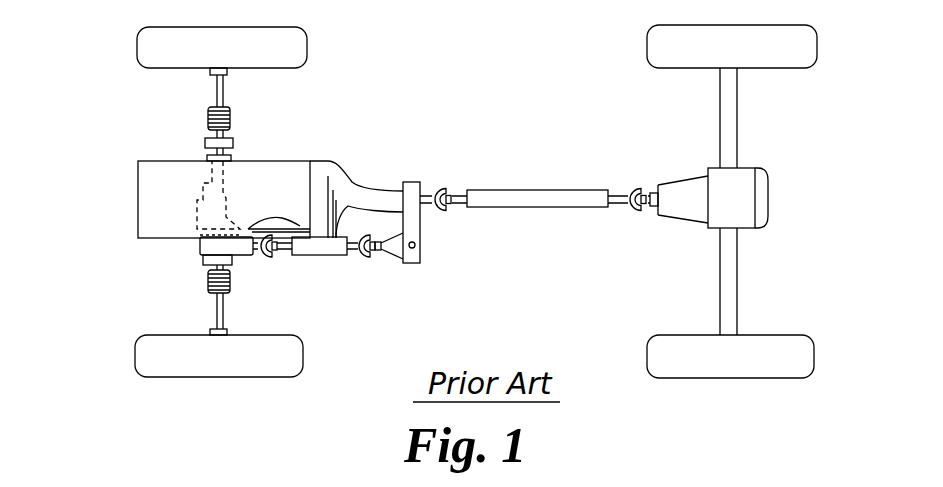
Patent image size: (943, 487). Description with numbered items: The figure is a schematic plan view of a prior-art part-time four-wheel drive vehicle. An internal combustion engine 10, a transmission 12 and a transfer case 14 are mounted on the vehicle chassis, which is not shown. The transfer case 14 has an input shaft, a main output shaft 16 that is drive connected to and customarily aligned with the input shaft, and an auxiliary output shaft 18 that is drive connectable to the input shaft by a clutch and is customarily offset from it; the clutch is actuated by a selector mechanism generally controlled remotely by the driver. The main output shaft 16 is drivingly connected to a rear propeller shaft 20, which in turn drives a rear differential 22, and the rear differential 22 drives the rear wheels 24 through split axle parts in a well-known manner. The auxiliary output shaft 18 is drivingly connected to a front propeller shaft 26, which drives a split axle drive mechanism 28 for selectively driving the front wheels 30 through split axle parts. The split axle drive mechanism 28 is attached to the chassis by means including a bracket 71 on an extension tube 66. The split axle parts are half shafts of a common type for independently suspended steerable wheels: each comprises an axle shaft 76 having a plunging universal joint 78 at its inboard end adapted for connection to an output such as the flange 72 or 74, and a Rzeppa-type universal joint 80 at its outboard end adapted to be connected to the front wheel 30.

The internal combustion engine 10 is at (289, 172).
The transmission 12 is at (384, 192).
The transfer case 14 is at (421, 230).
The main output shaft 16 is at (430, 190).
The auxiliary output shaft 18 is at (380, 253).
The rear propeller shaft 20 is at (516, 190).
The rear differential 22 is at (746, 188).
The rear wheels 24 is at (758, 70).
The front propeller shaft 26 is at (313, 256).
The split axle drive mechanism 28 is at (200, 245).
The front wheels 30 is at (300, 50).
The extension tube 66 is at (235, 183).
The bracket 71 is at (206, 158).
The flange 72 is at (205, 143).
The flange 74 is at (204, 260).
The axle shaft 76 is at (214, 80).
The plunging universal joint 78 is at (207, 112).
The Rzeppa-type universal joint 80 is at (227, 72).